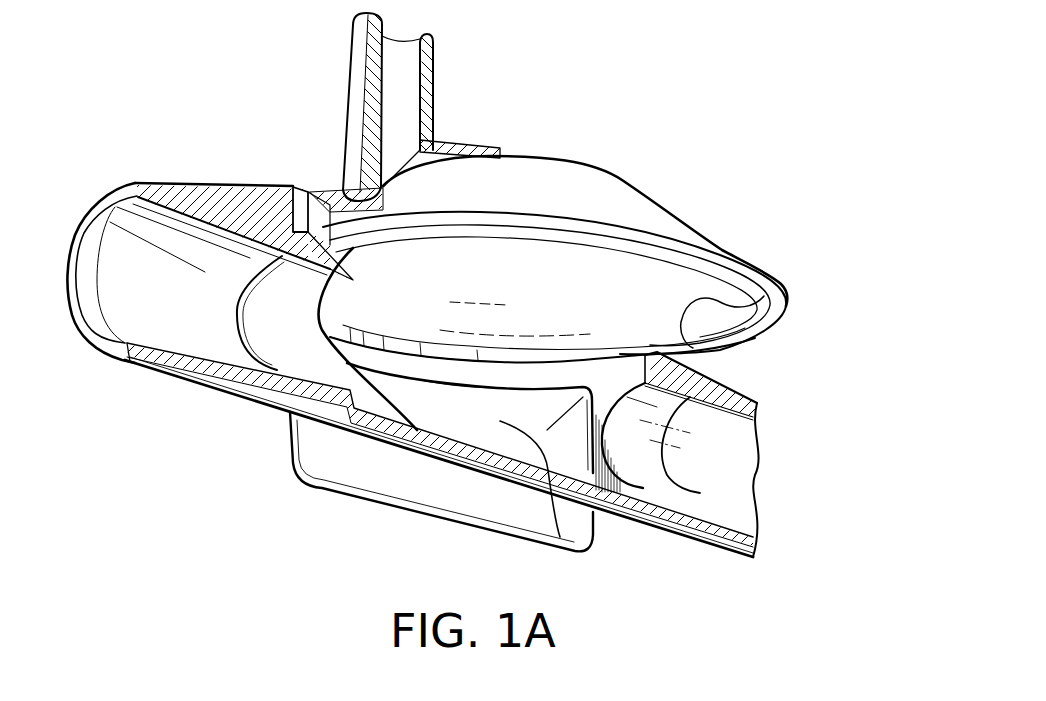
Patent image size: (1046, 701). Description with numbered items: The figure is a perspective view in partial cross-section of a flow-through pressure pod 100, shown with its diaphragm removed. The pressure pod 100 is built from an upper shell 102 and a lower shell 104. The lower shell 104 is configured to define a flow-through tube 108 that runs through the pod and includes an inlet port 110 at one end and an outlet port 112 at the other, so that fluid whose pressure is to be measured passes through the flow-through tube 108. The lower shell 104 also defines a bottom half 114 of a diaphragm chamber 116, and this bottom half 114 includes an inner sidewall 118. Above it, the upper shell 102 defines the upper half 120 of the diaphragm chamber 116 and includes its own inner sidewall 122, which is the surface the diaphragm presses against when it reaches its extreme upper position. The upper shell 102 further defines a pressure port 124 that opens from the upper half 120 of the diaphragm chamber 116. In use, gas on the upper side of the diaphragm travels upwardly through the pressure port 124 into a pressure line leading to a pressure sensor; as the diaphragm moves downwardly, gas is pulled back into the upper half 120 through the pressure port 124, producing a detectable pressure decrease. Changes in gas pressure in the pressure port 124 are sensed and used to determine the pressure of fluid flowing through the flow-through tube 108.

The pressure pod 100 is at (632, 146).
The upper shell 102 is at (668, 210).
The lower shell 104 is at (690, 540).
The flow-through tube 108 is at (172, 310).
The inlet port 110 is at (742, 462).
The outlet port 112 is at (96, 207).
The bottom half of diaphragm chamber 114 is at (560, 537).
The diaphragm chamber 116 is at (388, 406).
The inner sidewall 118 is at (432, 438).
The upper half of diaphragm chamber 120 is at (743, 350).
The inner sidewall 122 is at (764, 296).
The pressure port 124 is at (347, 57).